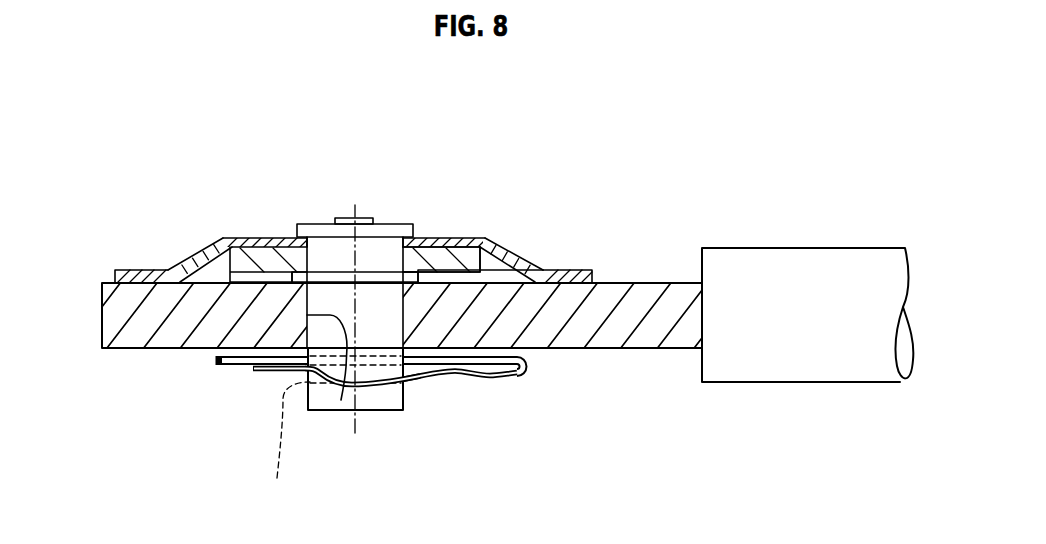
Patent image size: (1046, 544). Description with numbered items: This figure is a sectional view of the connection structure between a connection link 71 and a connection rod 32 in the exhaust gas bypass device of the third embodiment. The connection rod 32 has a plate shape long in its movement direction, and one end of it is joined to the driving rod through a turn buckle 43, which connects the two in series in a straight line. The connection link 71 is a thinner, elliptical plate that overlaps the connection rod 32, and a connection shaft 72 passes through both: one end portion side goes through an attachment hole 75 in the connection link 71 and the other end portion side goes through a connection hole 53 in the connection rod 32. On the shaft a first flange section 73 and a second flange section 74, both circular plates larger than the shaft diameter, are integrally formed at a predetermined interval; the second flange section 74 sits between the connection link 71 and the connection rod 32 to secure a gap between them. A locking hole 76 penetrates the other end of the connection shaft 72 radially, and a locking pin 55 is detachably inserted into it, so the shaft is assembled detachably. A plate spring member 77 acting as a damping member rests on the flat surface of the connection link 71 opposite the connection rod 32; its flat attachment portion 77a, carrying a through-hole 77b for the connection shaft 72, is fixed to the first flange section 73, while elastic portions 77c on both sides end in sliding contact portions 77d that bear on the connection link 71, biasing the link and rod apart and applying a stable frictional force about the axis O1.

The connection rod 32 is at (669, 276).
The turn buckle 43 is at (803, 367).
The connection hole 53 is at (341, 400).
The locking pin 55 is at (513, 378).
The connection link 71 is at (494, 262).
The connection shaft 72 is at (417, 395).
The first flange section 73 is at (300, 244).
The second flange section 74 is at (383, 279).
The attachment hole 75 is at (333, 260).
The locking hole 76 is at (284, 449).
The plate spring member 77 is at (370, 194).
The attachment portion 77a is at (442, 237).
The through-hole 77b is at (306, 241).
The elastic portions 77c is at (190, 260).
The sliding contact portions 77d is at (131, 269).
The axis O1 is at (355, 207).